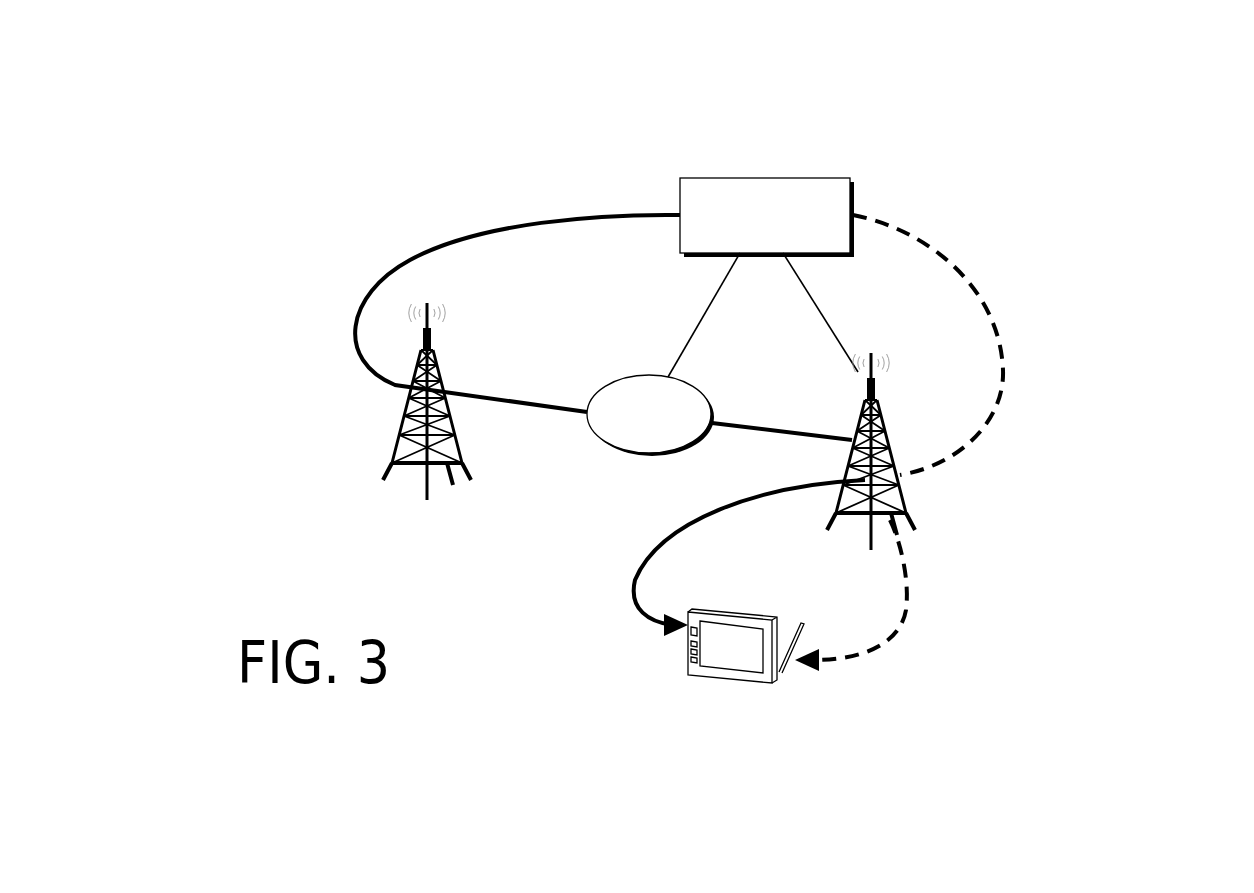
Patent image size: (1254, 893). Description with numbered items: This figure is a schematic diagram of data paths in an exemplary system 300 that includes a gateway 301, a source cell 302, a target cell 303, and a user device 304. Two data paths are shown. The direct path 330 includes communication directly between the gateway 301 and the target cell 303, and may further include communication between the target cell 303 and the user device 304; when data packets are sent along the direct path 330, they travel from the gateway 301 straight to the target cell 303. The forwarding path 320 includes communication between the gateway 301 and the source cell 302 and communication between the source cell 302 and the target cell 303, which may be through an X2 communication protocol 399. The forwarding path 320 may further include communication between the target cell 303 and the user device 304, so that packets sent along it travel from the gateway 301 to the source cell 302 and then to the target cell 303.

The system 300 is at (158, 120).
The gateway 301 is at (731, 178).
The source cell 302 is at (460, 448).
The target cell 303 is at (882, 408).
The user device 304 is at (718, 678).
The forwarding path 320 is at (472, 184).
The direct path 330 is at (1067, 271).
The X2 communication protocol 399 is at (631, 375).